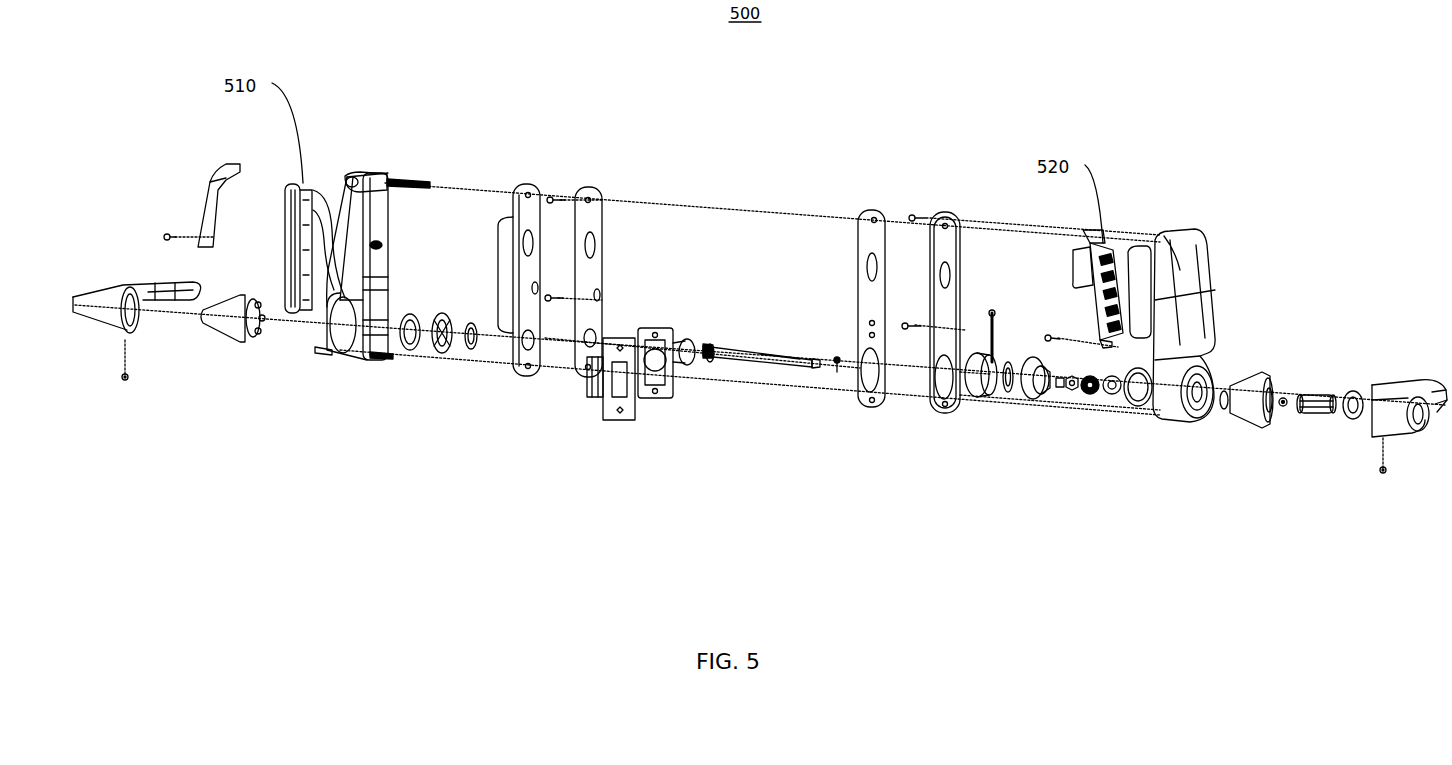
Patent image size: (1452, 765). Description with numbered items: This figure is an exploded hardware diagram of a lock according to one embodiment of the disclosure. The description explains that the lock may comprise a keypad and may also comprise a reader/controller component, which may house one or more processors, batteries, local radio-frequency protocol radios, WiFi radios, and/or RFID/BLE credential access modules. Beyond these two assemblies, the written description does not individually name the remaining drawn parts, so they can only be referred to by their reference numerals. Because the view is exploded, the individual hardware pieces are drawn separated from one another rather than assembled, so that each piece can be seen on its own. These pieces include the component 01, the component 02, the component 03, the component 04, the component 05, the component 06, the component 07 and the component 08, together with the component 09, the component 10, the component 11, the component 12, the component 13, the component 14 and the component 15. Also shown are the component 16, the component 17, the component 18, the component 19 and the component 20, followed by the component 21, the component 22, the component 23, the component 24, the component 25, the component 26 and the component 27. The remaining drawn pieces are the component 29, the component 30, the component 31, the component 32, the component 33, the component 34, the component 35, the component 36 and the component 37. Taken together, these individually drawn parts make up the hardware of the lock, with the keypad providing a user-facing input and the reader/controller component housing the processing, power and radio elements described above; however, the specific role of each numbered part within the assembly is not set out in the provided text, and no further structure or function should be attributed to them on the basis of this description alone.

The lever handle 01 is at (1400, 384).
The set screw 02 is at (120, 374).
The washer 03 is at (1356, 393).
The spindle sleeve 04 is at (1318, 415).
The screw 05 is at (1288, 398).
The rose cone 06 is at (1255, 428).
The outside housing 07 is at (1192, 242).
The O-ring 08 is at (413, 350).
The washer 09 is at (1113, 396).
The bearing 10 is at (1091, 396).
The nut 11 is at (1073, 392).
The clip 12 is at (1060, 390).
The cam 13 is at (1030, 400).
The washer 14 is at (478, 350).
The spring cup 15 is at (985, 398).
The screw 16 is at (1047, 333).
The keypad module 17 is at (1093, 243).
The mounting plate 18 is at (958, 216).
The screw 19 is at (578, 196).
The plate 20 is at (524, 184).
The pin 21 is at (836, 356).
The shaft 22 is at (793, 355).
The spindle rod 23 is at (734, 348).
The ring 24 is at (712, 366).
The retaining clip 25 is at (692, 340).
The latch housing 26 is at (650, 400).
The latch block 27 is at (615, 420).
The wave washer 29 is at (447, 313).
The bolt 30 is at (387, 176).
The inside body 31 is at (324, 358).
The spring bar 32 is at (305, 184).
The rose cone 33 is at (233, 350).
The bracket 34 is at (224, 168).
The screw 35 is at (167, 232).
The handle cover 36 is at (108, 288).
The bracket plate 37 is at (1075, 283).